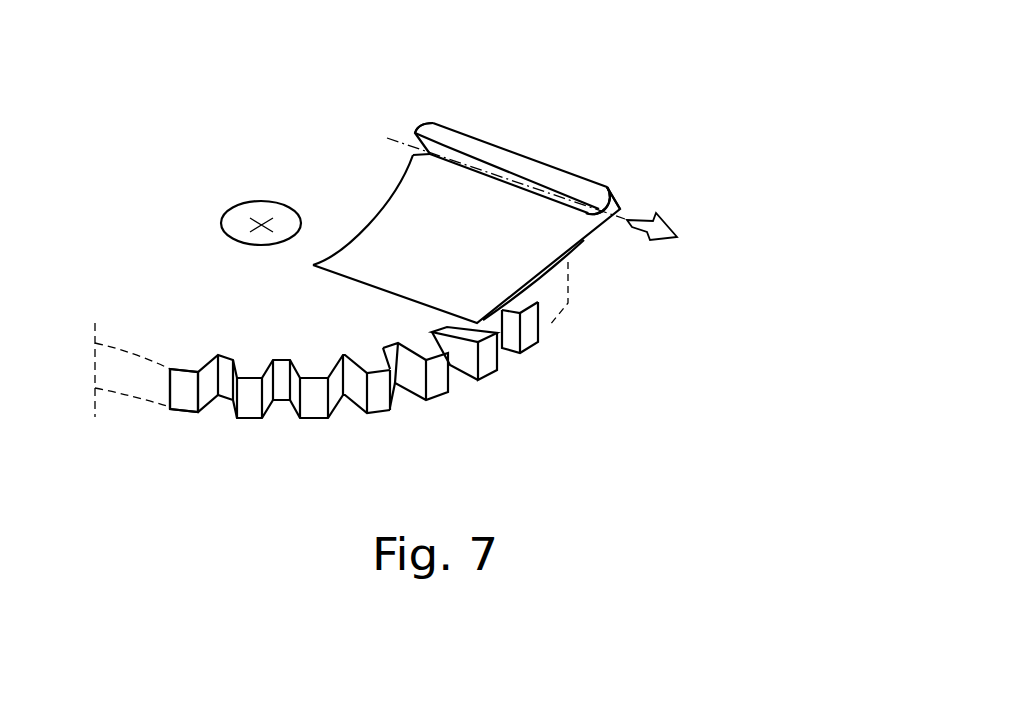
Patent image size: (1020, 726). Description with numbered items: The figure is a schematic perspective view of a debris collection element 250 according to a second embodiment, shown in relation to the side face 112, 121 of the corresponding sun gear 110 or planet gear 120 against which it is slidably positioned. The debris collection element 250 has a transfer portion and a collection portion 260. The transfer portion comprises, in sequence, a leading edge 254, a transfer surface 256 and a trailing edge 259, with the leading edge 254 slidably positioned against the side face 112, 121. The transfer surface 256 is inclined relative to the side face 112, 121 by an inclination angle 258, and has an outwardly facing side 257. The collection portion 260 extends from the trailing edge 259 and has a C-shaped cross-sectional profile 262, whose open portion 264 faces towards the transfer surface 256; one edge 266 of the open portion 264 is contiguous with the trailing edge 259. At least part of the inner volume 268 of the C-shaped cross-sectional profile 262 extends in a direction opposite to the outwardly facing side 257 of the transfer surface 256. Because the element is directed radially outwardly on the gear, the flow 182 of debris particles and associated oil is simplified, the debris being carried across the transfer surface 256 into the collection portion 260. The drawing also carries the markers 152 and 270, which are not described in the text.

The sun gear 110 is at (174, 351).
The planet gear 120 is at (249, 385).
The side face 112 is at (225, 441).
The side face 121 is at (249, 385).
The contact surface 152 is at (388, 208).
The flow 182 is at (675, 213).
The debris collection element 250 is at (570, 165).
The leading edge 254 is at (372, 288).
The transfer surface 256 is at (365, 253).
The outwardly facing side 257 is at (422, 280).
The inclination angle 258 is at (548, 272).
The trailing edge 259 is at (575, 238).
The collection portion 260 is at (428, 127).
The C-shaped cross-sectional profile 262 is at (607, 193).
The open portion 264 is at (397, 136).
The edge 266 is at (478, 187).
The inner volume 268 is at (603, 186).
The direction arrow 270 is at (702, 258).